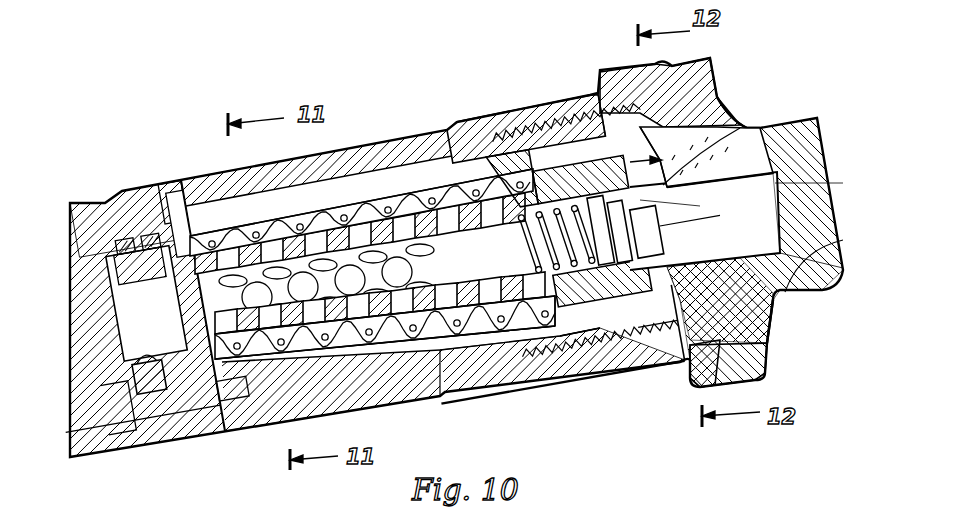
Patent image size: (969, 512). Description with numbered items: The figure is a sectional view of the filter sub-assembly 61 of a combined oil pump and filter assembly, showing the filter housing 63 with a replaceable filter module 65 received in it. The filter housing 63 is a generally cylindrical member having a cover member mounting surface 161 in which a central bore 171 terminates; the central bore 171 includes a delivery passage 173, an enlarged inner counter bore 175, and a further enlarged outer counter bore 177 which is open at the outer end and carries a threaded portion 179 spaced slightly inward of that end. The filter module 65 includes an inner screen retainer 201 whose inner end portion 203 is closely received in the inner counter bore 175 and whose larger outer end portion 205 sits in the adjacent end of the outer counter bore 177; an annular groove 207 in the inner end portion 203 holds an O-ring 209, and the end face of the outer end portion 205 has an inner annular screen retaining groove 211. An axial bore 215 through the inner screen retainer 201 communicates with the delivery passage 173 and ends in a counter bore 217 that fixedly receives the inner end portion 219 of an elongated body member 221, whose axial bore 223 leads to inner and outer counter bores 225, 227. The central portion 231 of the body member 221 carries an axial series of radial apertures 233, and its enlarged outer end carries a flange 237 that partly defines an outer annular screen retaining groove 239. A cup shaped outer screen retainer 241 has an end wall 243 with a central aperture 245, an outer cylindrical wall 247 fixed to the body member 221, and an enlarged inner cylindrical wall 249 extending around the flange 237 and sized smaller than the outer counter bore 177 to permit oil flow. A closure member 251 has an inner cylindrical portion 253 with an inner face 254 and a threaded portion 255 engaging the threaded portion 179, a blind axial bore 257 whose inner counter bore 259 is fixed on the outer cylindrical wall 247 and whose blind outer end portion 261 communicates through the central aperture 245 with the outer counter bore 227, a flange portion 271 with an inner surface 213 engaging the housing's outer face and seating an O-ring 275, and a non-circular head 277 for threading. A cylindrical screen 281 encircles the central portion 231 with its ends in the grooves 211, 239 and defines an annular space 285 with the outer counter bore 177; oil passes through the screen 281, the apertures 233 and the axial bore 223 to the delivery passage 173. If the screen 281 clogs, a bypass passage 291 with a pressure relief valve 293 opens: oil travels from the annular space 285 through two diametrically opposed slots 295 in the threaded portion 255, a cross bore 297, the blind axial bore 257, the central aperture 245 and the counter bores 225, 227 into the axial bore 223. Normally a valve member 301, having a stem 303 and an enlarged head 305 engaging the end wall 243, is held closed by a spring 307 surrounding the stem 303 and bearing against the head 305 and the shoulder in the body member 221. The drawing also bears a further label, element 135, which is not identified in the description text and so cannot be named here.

The filter sub-assembly 61 is at (394, 122).
The filter housing 63 is at (482, 120).
The filter module 65 is at (232, 378).
The coupling body 135 is at (545, 350).
The cover member mounting surface 161 is at (72, 300).
The central bore 171 is at (92, 357).
The delivery passage 173 is at (93, 327).
The inner counter bore 175 is at (150, 253).
The outer counter bore 177 is at (337, 193).
The threaded portion 179 is at (612, 380).
The inner screen retainer 201 is at (188, 390).
The inner end portion 203 is at (122, 377).
The outer end portion 205 is at (170, 213).
The annular groove 207 is at (140, 363).
The O-ring 209 is at (100, 273).
The inner annular screen retaining groove 211 is at (200, 392).
The inner surface 213 is at (663, 65).
The axial bore 215 is at (110, 305).
The counter bore 217 is at (187, 253).
The inner end portion 219 is at (472, 202).
The body member 221 is at (347, 354).
The axial bore 223 is at (280, 350).
The inner counter bore 225 is at (470, 370).
The outer counter bore 227 is at (600, 345).
The central portion 231 is at (372, 346).
The apertures 233 is at (440, 365).
The flange 237 is at (560, 125).
The outer annular screen retaining groove 239 is at (505, 135).
The outer screen retainer 241 is at (690, 137).
The end wall 243 is at (668, 294).
The central aperture 245 is at (640, 200).
The outer cylindrical wall 247 is at (578, 110).
The inner cylindrical wall 249 is at (555, 335).
The closure member 251 is at (800, 130).
The inner cylindrical portion 253 is at (720, 175).
The inner face 254 is at (583, 95).
The threaded portion 255 is at (690, 373).
The blind axial bore 257 is at (790, 213).
The inner counter bore 259 is at (715, 88).
The blind outer end portion 261 is at (775, 184).
The flange portion 271 is at (748, 357).
The O-ring 275 is at (763, 313).
The non-circular head 277 is at (830, 250).
The cylindrical screen 281 is at (291, 222).
The annular space 285 is at (367, 367).
The bypass passage 291 is at (690, 160).
The pressure relief valve 293 is at (655, 228).
The slots 295 is at (610, 112).
The cross bore 297 is at (640, 188).
The valve member 301 is at (647, 235).
The stem 303 is at (500, 261).
The head 305 is at (640, 247).
The spring 307 is at (500, 244).